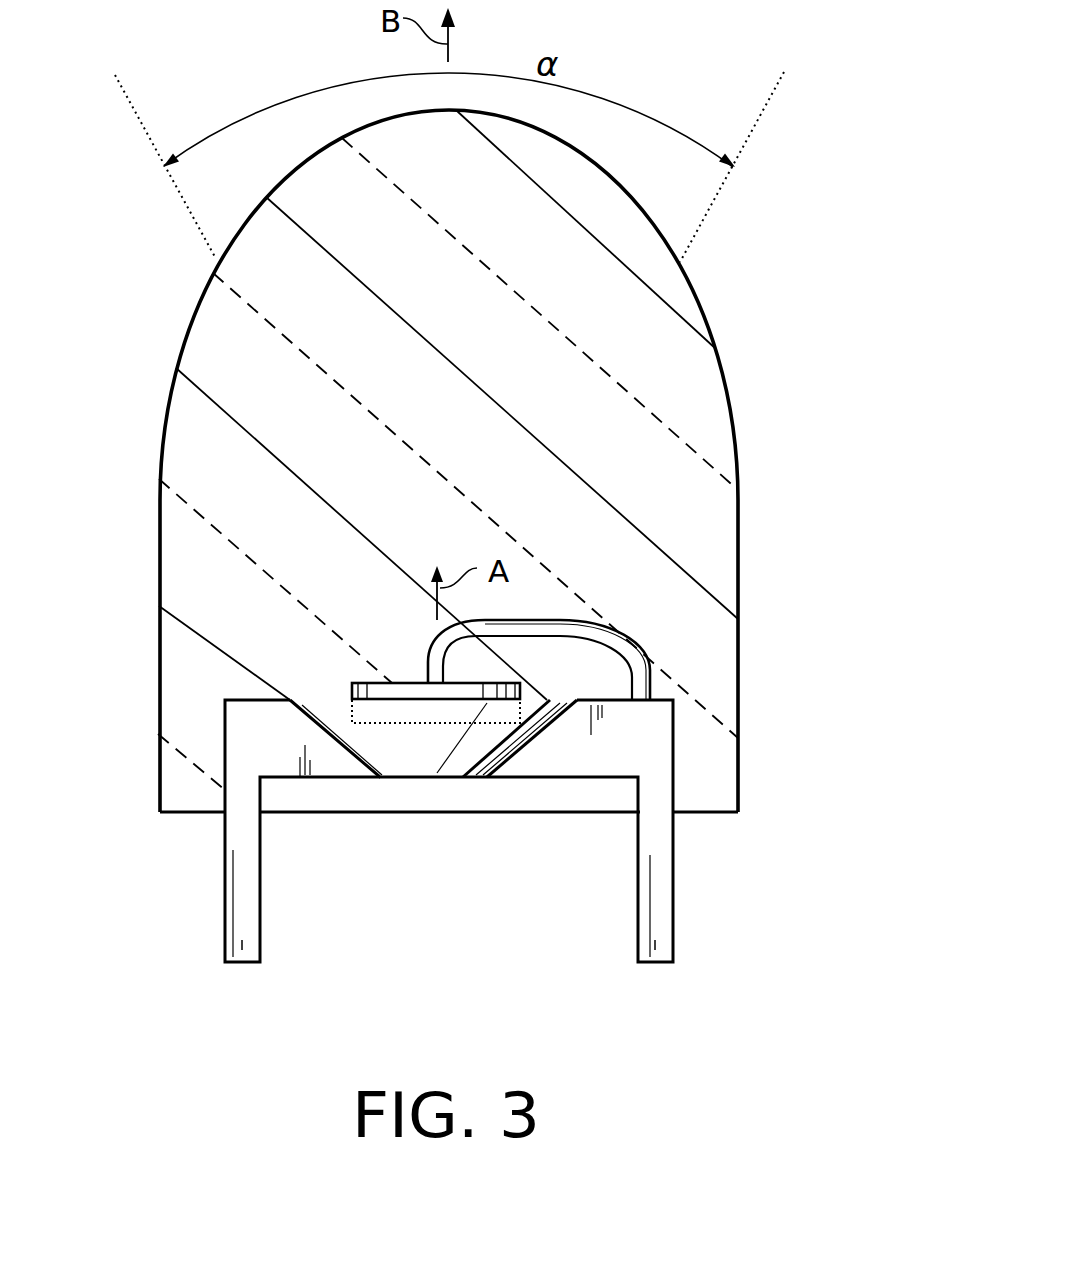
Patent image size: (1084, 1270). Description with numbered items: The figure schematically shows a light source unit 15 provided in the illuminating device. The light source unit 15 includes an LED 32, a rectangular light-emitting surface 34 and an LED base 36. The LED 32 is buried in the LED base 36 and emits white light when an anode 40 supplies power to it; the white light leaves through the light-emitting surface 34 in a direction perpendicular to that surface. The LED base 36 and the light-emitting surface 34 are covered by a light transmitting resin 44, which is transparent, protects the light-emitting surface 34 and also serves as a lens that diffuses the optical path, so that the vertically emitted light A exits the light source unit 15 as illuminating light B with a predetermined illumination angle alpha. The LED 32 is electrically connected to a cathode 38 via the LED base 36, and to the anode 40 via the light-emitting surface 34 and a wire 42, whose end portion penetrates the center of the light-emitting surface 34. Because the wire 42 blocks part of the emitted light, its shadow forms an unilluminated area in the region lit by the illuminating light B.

The light source unit 15 is at (510, 536).
The LED 32 is at (460, 723).
The light-emitting surface 34 is at (408, 681).
The LED base 36 is at (415, 755).
The cathode 38 is at (250, 915).
The anode 40 is at (663, 915).
The wire 42 is at (557, 626).
The light transmitting resin 44 is at (708, 502).